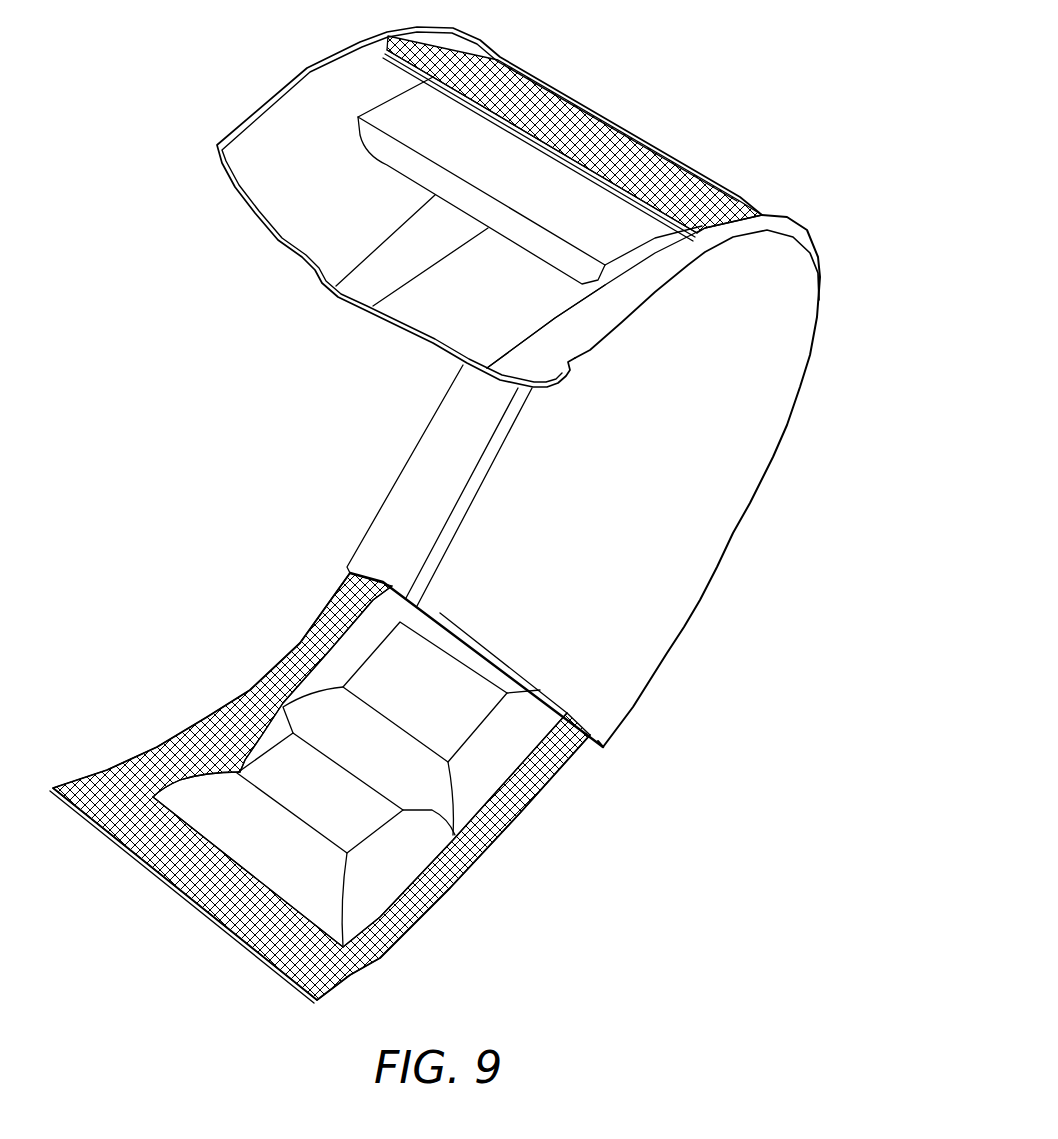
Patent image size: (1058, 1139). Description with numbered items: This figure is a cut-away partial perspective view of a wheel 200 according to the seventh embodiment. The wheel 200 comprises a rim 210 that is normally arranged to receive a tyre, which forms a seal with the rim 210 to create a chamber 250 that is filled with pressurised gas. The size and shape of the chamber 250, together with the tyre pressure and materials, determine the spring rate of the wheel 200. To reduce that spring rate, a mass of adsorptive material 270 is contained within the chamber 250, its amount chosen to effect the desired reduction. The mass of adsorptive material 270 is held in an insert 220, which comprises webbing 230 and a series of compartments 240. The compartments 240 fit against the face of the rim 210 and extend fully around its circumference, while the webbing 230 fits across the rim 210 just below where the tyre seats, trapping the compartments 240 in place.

The wheel 200 is at (676, 64).
The rim 210 is at (288, 132).
The insert 220 is at (191, 910).
The webbing 230 is at (123, 790).
The compartments 240 is at (540, 184).
The chamber 250 is at (547, 348).
The mass of adsorptive material 270 is at (397, 872).